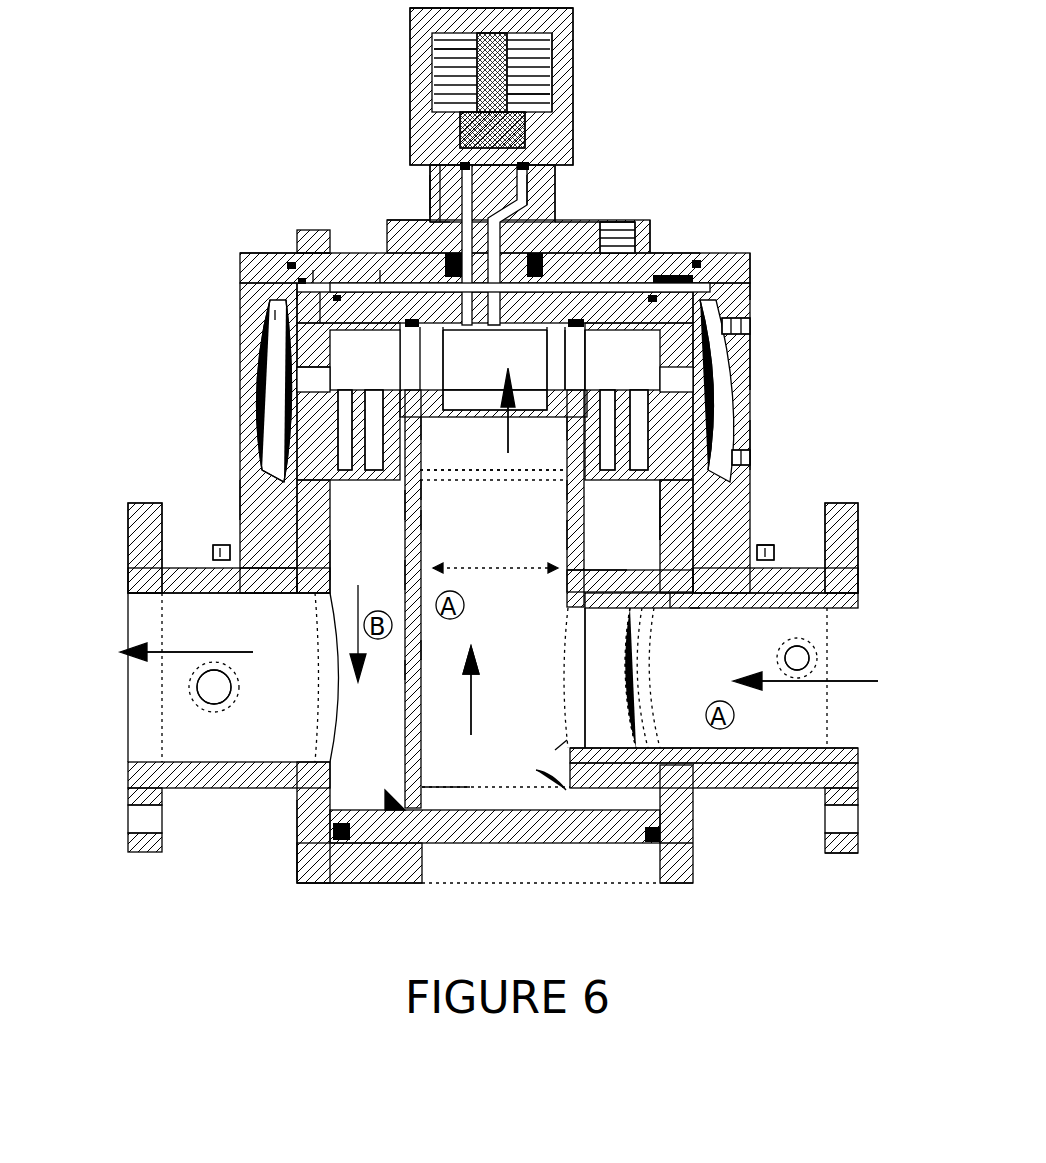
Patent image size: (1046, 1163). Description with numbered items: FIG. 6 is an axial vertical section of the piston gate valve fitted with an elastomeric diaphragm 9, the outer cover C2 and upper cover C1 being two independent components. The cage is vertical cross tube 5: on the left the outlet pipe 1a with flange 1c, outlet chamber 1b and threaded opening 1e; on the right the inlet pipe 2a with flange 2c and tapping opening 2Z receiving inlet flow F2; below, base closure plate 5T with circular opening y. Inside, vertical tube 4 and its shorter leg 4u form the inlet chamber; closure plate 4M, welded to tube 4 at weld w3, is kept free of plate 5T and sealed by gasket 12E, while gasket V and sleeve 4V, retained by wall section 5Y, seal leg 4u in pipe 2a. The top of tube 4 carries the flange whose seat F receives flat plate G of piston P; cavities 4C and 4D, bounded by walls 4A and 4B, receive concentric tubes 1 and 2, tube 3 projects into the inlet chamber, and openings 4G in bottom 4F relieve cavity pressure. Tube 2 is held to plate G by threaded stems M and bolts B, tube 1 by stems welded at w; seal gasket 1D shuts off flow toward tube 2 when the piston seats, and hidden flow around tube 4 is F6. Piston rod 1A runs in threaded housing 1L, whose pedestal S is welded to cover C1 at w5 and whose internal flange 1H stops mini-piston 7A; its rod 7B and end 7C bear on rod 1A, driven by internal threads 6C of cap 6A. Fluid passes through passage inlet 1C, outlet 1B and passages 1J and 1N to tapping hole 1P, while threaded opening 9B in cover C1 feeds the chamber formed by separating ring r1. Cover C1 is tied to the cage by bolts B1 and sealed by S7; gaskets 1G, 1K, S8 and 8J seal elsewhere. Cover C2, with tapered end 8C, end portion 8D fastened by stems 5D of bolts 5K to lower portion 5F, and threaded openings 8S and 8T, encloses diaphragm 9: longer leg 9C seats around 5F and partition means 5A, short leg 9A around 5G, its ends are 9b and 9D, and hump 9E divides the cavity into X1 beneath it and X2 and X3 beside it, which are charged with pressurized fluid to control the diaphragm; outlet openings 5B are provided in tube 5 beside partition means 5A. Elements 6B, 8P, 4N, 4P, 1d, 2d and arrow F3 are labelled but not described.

The cap 6A is at (432, 52).
The internal threads 6C is at (440, 62).
The spring 6B is at (437, 90).
The internal flange 1H is at (430, 122).
The mini-piston rod 7B is at (510, 45).
The mini-piston 7A is at (548, 130).
The piston rod 1A is at (527, 132).
The rod end 7C is at (573, 12).
The threaded cylindrical housing 1L is at (430, 185).
The seal gasket 1G is at (440, 172).
The passage outlet 1B is at (555, 185).
The threaded tapping hole 1P is at (632, 222).
The seal gasket 1K is at (390, 222).
The pedestal S is at (440, 222).
The tubular passage 1J is at (530, 207).
The bolts B is at (628, 222).
The tubular passage 1N is at (545, 220).
The welding w5 is at (670, 228).
The seal gasket S8 is at (658, 252).
The threaded opening 9B is at (313, 275).
The top cover C1 is at (322, 300).
The bolts B1 is at (310, 253).
The post 8P is at (300, 252).
The tapered end portion 8C is at (288, 263).
The separating ring r1 is at (382, 275).
The seal S7 is at (752, 268).
The cavity X3 is at (300, 300).
The short leg seat portion 5G is at (275, 313).
The cavity X1 is at (280, 347).
The partition means 5A is at (283, 377).
The cavity X2 is at (267, 433).
The lower portion 5F is at (267, 452).
The cylindrical cover C2 is at (247, 493).
The flange 1c is at (130, 540).
The end portion 8D is at (213, 555).
The outlet pipe 1a is at (130, 596).
The flow direction F3 is at (150, 655).
The outlet chamber 1b is at (180, 668).
The flange groove 1d is at (137, 818).
The threaded opening 1e is at (218, 692).
The bolts 5K is at (262, 583).
The seal gasket 8J is at (280, 575).
The bolt stems 5D is at (258, 597).
The cylindrical wall 4A is at (405, 507).
The outlet openings 5B is at (402, 557).
The sleeve passage 4N is at (385, 714).
The vertical cylindrical tube 4 is at (422, 645).
The sleeve port 4P is at (482, 660).
The closure plate 4M is at (448, 808).
The weld w3 is at (388, 805).
The vertical cross tube 5 is at (297, 808).
The base closure plate 5T is at (420, 865).
The circular opening y is at (525, 885).
The cylindrical wall 4B is at (421, 525).
The openings 4G is at (451, 497).
The flange bottom 4F is at (535, 497).
The hidden flow F6 is at (485, 577).
The wall section 5Y is at (557, 740).
The shorter tube leg 4u is at (601, 678).
The seal gasket V is at (623, 678).
The sleeve 4V is at (808, 612).
The threaded tapping opening 2Z is at (802, 656).
The inlet flow F2 is at (845, 687).
The inlet pipe 2a is at (752, 765).
The flange groove 2d is at (843, 828).
The seal gasket 12E is at (670, 847).
The flange 2c is at (857, 855).
The diaphragm end 9b is at (752, 290).
The short leg 9A is at (752, 316).
The threaded opening 8S is at (752, 333).
The hump 9E is at (752, 373).
The elastomeric diaphragm 9 is at (728, 400).
The longer leg 9C is at (752, 432).
The threaded opening 8T is at (752, 456).
The diaphragm end 9D is at (752, 468).
The welding w is at (458, 359).
The passage inlet 1C is at (495, 346).
The flat plate G is at (532, 360).
The piston valve P is at (555, 360).
The threaded stems M is at (604, 360).
The seal gasket 1D is at (495, 386).
The seat F is at (494, 423).
The concentric tube 1 is at (497, 397).
The concentric tube 2 is at (495, 396).
The circular tube 3 is at (422, 420).
The cavity 4D is at (563, 452).
The cavity 4C is at (541, 438).